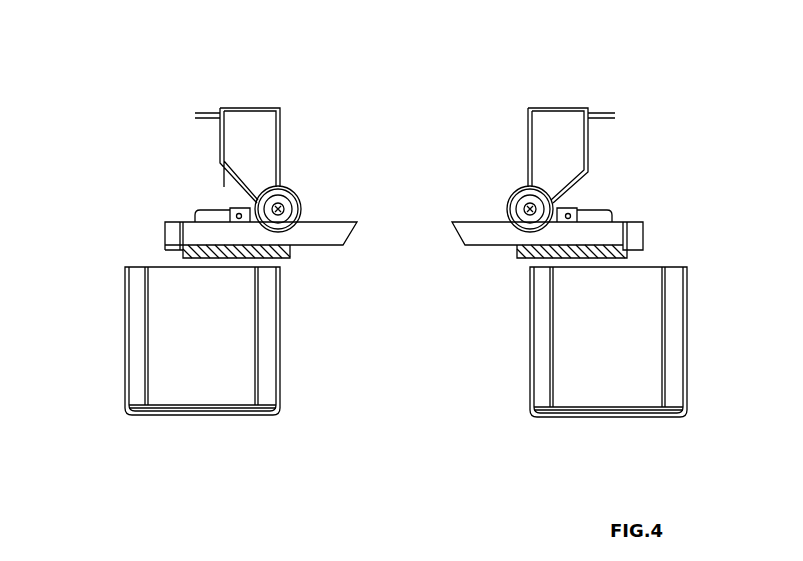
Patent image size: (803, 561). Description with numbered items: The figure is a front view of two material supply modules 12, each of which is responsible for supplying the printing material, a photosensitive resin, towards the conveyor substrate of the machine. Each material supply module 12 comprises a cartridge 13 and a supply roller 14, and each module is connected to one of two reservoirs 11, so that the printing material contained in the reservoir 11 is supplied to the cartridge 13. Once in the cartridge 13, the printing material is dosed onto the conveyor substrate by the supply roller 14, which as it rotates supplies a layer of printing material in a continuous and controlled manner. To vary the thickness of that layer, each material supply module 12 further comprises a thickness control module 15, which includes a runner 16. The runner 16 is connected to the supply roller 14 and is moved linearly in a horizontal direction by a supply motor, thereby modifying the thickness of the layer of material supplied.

The reservoir 11 is at (157, 343).
The material supply module 12 is at (163, 167).
The cartridge 13 is at (250, 115).
The supply roller 14 is at (292, 198).
The thickness control module 15 is at (182, 215).
The runner 16 is at (252, 215).